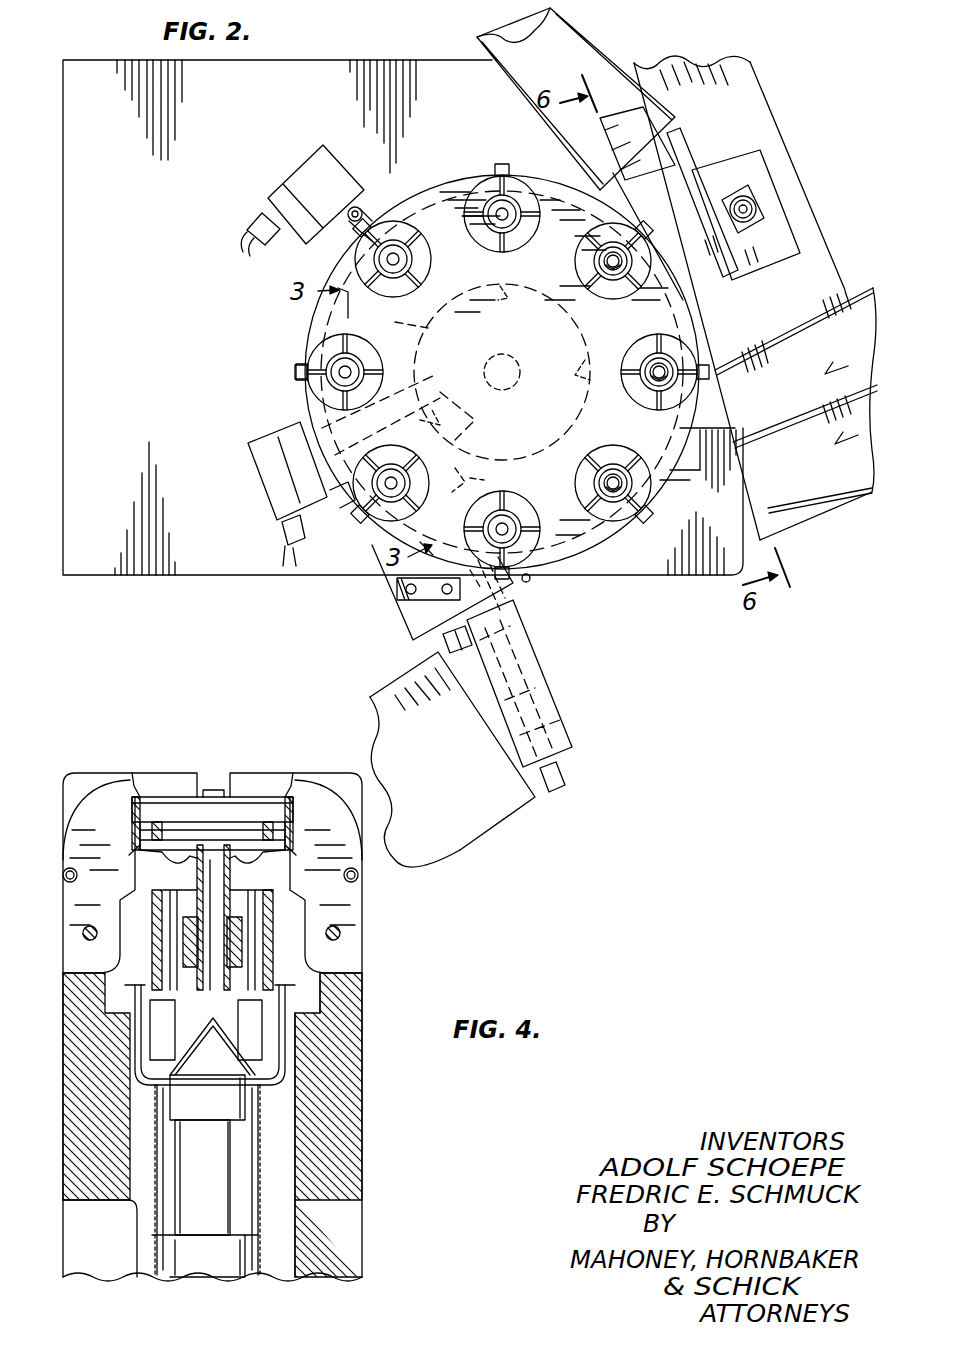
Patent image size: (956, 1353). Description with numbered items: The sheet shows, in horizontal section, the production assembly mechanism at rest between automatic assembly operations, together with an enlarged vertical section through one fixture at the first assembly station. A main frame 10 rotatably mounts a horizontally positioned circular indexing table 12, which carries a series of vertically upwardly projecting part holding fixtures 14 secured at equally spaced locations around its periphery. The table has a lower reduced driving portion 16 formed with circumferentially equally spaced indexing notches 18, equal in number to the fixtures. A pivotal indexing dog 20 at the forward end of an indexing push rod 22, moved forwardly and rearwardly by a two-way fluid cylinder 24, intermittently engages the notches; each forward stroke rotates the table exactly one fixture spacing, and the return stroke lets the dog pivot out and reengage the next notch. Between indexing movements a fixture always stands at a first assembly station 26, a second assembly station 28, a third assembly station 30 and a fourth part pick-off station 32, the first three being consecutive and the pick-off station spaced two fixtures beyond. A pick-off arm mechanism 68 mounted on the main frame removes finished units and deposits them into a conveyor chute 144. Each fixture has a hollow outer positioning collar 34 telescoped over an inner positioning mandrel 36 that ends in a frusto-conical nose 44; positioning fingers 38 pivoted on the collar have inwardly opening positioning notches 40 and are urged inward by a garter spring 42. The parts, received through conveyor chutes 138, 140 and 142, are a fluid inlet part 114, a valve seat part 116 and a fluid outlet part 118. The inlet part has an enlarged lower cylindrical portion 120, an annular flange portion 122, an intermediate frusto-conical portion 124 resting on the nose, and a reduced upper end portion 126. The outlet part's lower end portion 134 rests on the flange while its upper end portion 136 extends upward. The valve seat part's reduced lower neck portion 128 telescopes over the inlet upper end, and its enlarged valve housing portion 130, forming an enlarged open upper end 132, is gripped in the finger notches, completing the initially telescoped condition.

In FIG. 2, the main frame 10 is at (110, 54).
In FIG. 2, the indexing table 12 is at (303, 316).
In FIG. 2, the part holding fixtures 14 is at (486, 178).
In FIG. 4, the part holding fixtures 14 is at (348, 1146).
In FIG. 2, the lower reduced driving portion 16 is at (397, 322).
In FIG. 2, the indexing notches 18 is at (588, 256).
In FIG. 2, the indexing dog 20 is at (466, 420).
In FIG. 2, the indexing push rod 22 is at (485, 480).
In FIG. 2, the two-way fluid cylinder 24 is at (556, 684).
In FIG. 2, the first assembly station 26 is at (530, 582).
In FIG. 2, the second assembly station 28 is at (355, 512).
In FIG. 2, the third assembly station 30 is at (297, 374).
In FIG. 2, the fourth part pick-off station 32 is at (592, 206).
In FIG. 4, the outer positioning collar 34 is at (92, 1042).
In FIG. 4, the inner positioning mandrel 36 is at (206, 1262).
In FIG. 4, the positioning fingers 38 is at (92, 815).
In FIG. 4, the positioning notches 40 is at (136, 790).
In FIG. 4, the garter spring 42 is at (64, 880).
In FIG. 4, the frusto-conical nose 44 is at (210, 1062).
In FIG. 2, the pick-off arm mechanism 68 is at (768, 188).
In FIG. 4, the fluid inlet part 114 is at (262, 1232).
In FIG. 4, the valve seat part 116 is at (340, 856).
In FIG. 4, the fluid outlet part 118 is at (270, 960).
In FIG. 4, the enlarged lower cylindrical portion 120 is at (262, 1180).
In FIG. 4, the annular flange portion 122 is at (262, 1092).
In FIG. 4, the intermediate frusto-conical portion 124 is at (260, 1052).
In FIG. 4, the reduced upper end portion 126 is at (230, 930).
In FIG. 4, the reduced lower neck portion 128 is at (235, 880).
In FIG. 4, the enlarged valve housing portion 130 is at (208, 795).
In FIG. 4, the enlarged open upper end 132 is at (262, 795).
In FIG. 4, the lower end portion 134 is at (265, 1070).
In FIG. 4, the upper end portion 136 is at (270, 905).
In FIG. 2, the conveyor chute 138 is at (825, 470).
In FIG. 2, the conveyor chute 140 is at (878, 302).
In FIG. 2, the conveyor chute 142 is at (484, 806).
In FIG. 2, the conveyor chute 144 is at (578, 44).